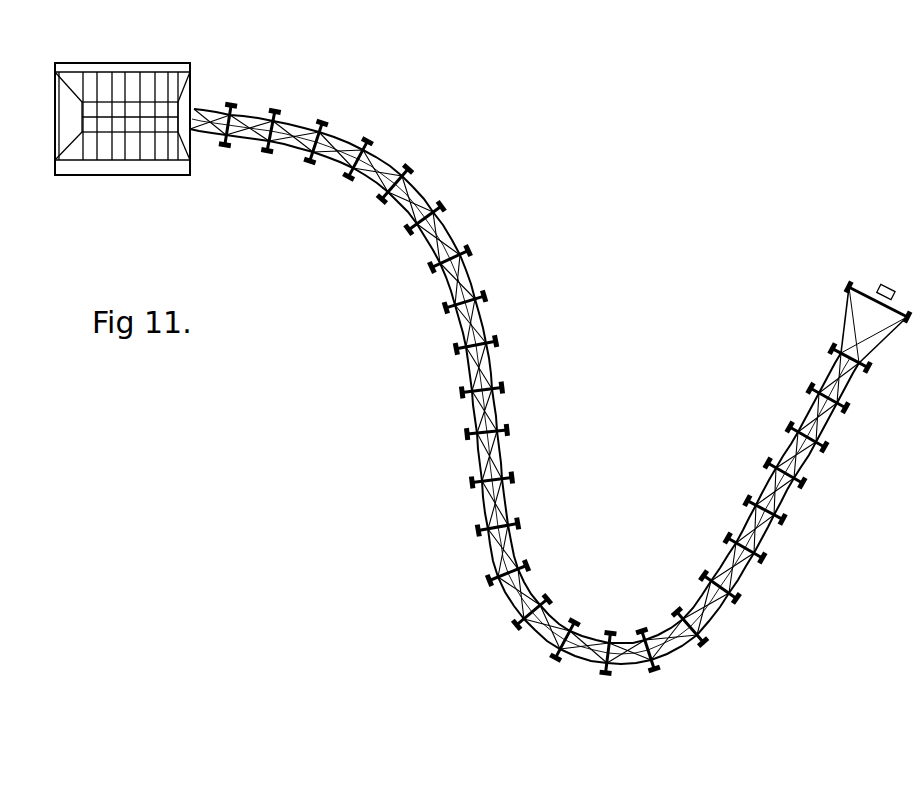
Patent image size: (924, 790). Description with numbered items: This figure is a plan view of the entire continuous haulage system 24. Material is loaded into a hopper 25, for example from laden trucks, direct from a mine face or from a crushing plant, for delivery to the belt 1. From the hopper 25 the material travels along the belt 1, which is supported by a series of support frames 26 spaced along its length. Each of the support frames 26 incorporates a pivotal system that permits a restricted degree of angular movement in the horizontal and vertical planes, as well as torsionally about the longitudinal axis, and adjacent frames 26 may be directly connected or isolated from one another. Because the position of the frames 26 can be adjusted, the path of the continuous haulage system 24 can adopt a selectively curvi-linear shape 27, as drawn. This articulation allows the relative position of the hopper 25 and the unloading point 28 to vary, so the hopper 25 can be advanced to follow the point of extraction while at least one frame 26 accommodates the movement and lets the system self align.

The belt 1 is at (340, 132).
The continuous haulage system 24 is at (619, 308).
The hopper 25 is at (167, 177).
The support frames 26 is at (445, 313).
The selectively curvi-linear shape 27 is at (594, 668).
The unloading point 28 is at (867, 292).